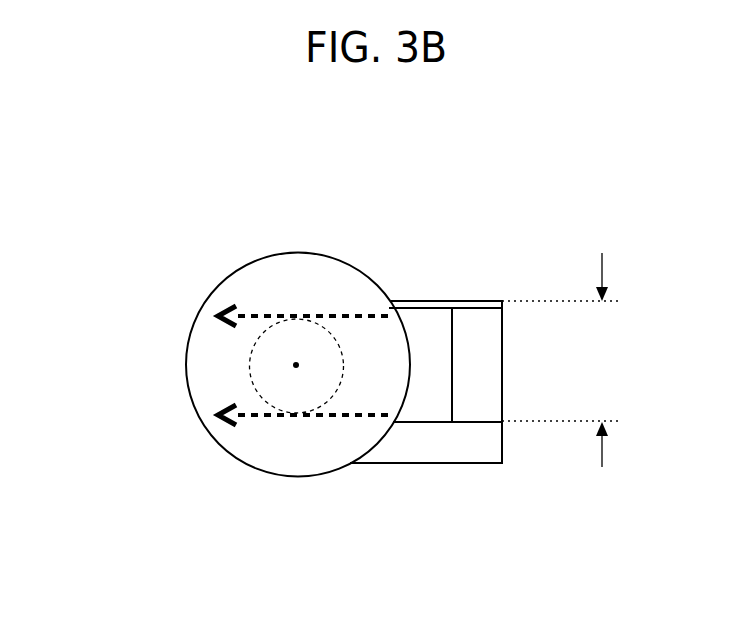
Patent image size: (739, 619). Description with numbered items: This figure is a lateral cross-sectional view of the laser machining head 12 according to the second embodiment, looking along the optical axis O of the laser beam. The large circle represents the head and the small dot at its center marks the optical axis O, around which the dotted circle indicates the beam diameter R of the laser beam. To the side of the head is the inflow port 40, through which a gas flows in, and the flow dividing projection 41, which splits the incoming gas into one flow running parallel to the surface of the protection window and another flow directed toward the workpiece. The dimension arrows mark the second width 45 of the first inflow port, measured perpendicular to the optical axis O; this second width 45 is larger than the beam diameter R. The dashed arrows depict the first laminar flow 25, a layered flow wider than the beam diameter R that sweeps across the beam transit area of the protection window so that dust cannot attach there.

The laser machining head 12 is at (470, 210).
The first laminar flow 25 is at (270, 317).
The inflow port 40 is at (473, 301).
The flow dividing projection 41 is at (430, 410).
The second width 45 is at (602, 450).
The beam diameter R is at (335, 338).
The optical axis O is at (296, 368).